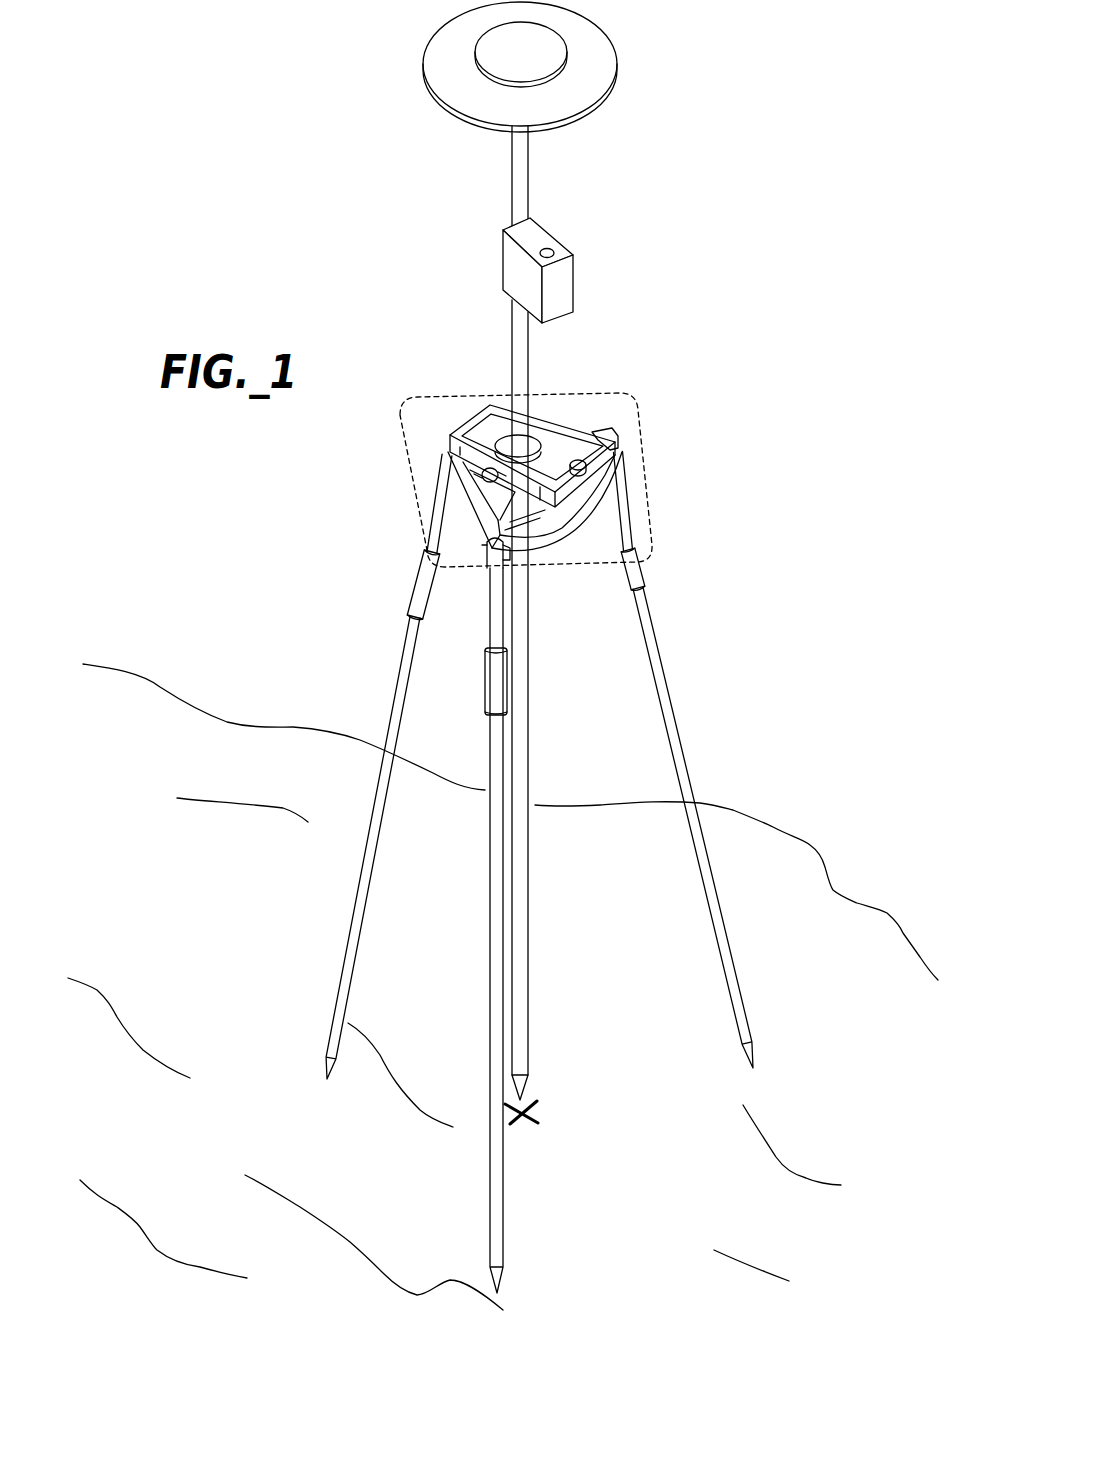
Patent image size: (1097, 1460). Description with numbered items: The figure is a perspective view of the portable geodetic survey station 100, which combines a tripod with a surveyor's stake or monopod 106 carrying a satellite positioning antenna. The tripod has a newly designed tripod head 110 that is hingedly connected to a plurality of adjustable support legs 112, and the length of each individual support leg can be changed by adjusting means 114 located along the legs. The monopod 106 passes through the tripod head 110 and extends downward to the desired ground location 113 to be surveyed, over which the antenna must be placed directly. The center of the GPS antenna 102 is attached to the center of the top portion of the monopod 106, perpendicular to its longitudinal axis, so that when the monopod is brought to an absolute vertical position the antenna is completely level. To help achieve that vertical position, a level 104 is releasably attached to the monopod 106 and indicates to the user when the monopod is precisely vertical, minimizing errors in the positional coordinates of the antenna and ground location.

The portable geodetic survey station 100 is at (368, 194).
The GPS antenna 102 is at (595, 42).
The level 104 is at (568, 298).
The monopod 106 is at (525, 185).
The tripod head 110 is at (650, 455).
The adjustable support legs 112 is at (500, 985).
The ground location 113 is at (558, 1114).
The adjusting means 114 is at (497, 695).